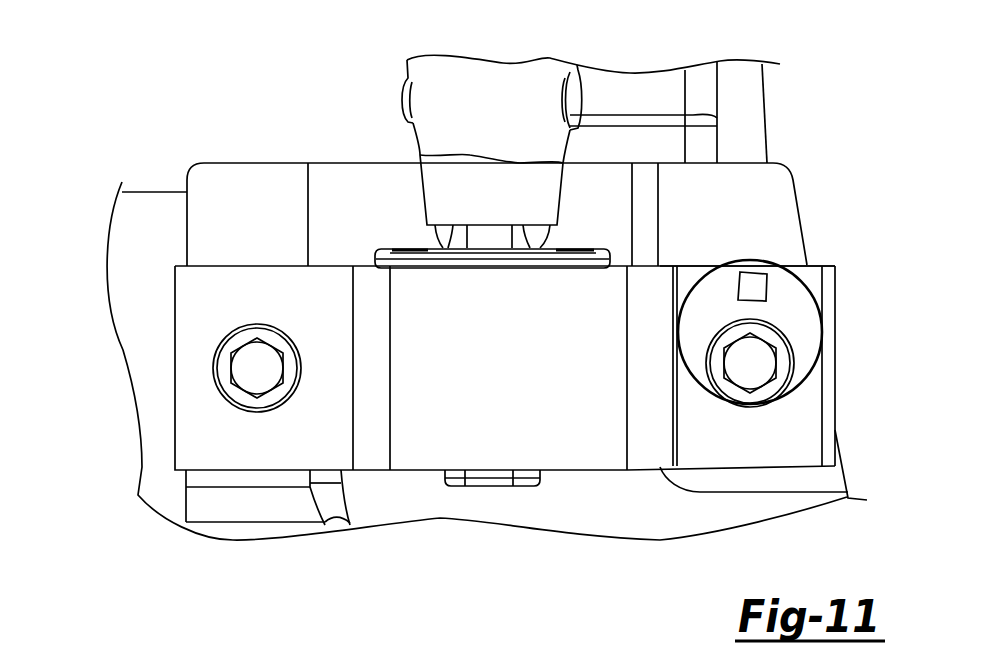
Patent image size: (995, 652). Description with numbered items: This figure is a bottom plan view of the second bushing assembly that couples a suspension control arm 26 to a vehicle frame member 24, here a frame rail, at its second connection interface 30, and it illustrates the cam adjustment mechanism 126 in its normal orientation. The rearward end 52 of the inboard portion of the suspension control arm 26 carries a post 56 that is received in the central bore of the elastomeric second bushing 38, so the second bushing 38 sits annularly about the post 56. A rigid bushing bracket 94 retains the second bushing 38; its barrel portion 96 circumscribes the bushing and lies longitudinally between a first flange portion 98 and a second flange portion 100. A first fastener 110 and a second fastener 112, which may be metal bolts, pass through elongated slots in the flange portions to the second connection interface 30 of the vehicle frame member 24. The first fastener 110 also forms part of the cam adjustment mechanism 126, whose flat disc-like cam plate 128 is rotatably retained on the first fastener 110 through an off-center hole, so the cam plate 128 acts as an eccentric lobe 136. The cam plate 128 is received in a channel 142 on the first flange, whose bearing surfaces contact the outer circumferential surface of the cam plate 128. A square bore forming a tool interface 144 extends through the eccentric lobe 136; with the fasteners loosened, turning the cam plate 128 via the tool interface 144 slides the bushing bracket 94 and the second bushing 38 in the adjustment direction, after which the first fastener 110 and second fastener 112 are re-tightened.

The vehicle frame member 24 is at (140, 262).
The suspension control arm 26 is at (500, 72).
The second connection interface 30 is at (254, 200).
The second bushing 38 is at (580, 245).
The rearward end 52 is at (447, 193).
The post 56 is at (488, 486).
The bushing bracket 94 is at (401, 484).
The barrel portion 96 is at (588, 430).
The first flange portion 98 is at (658, 300).
The second flange portion 100 is at (243, 446).
The first fastener 110 is at (752, 365).
The second fastener 112 is at (248, 370).
The cam adjustment mechanism 126 is at (721, 420).
The cam plate 128 is at (803, 273).
The eccentric lobe 136 is at (725, 303).
The channel 142 is at (792, 443).
The tool interface 144 is at (757, 275).